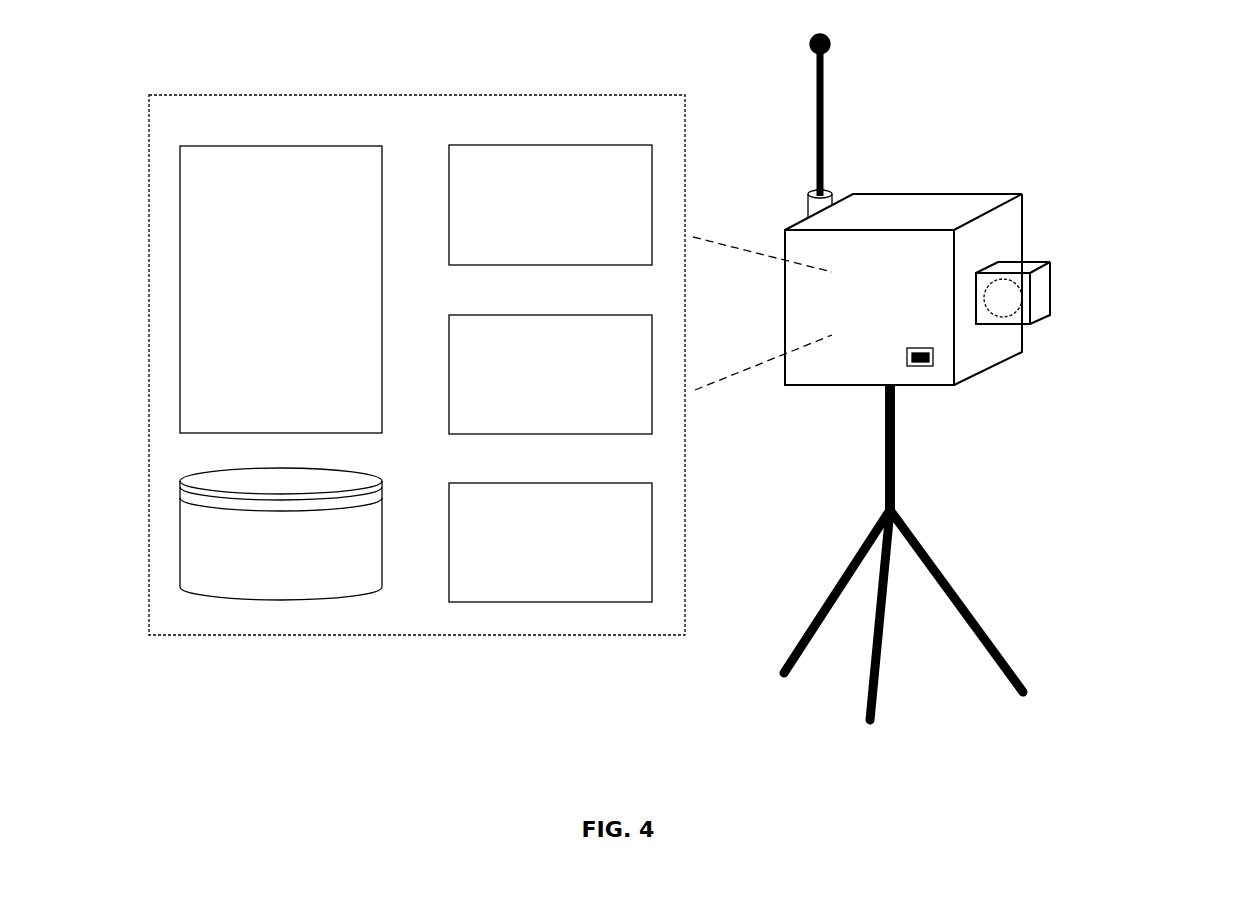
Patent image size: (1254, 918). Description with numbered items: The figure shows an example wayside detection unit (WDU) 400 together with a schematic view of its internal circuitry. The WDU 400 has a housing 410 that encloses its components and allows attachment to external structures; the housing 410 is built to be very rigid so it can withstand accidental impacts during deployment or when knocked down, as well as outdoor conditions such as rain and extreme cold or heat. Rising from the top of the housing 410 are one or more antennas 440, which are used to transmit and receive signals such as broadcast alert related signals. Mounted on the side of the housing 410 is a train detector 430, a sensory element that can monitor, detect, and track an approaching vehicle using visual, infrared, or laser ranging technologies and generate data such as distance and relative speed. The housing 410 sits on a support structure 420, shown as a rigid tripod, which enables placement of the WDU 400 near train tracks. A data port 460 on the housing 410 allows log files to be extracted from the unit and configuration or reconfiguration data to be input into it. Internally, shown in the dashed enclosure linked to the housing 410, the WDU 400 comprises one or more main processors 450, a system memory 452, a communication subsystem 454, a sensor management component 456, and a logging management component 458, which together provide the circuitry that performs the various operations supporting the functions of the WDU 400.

The wayside detection unit (WDU) 400 is at (694, 425).
The housing 410 is at (1032, 203).
The support structure 420 is at (910, 503).
The train detector 430 is at (1063, 294).
The antennas 440 is at (873, 145).
The main processors 450 is at (535, 575).
The system memory 452 is at (266, 583).
The communication subsystem 454 is at (266, 321).
The sensor management component 456 is at (535, 406).
The logging management component 458 is at (535, 238).
The data port 460 is at (948, 366).